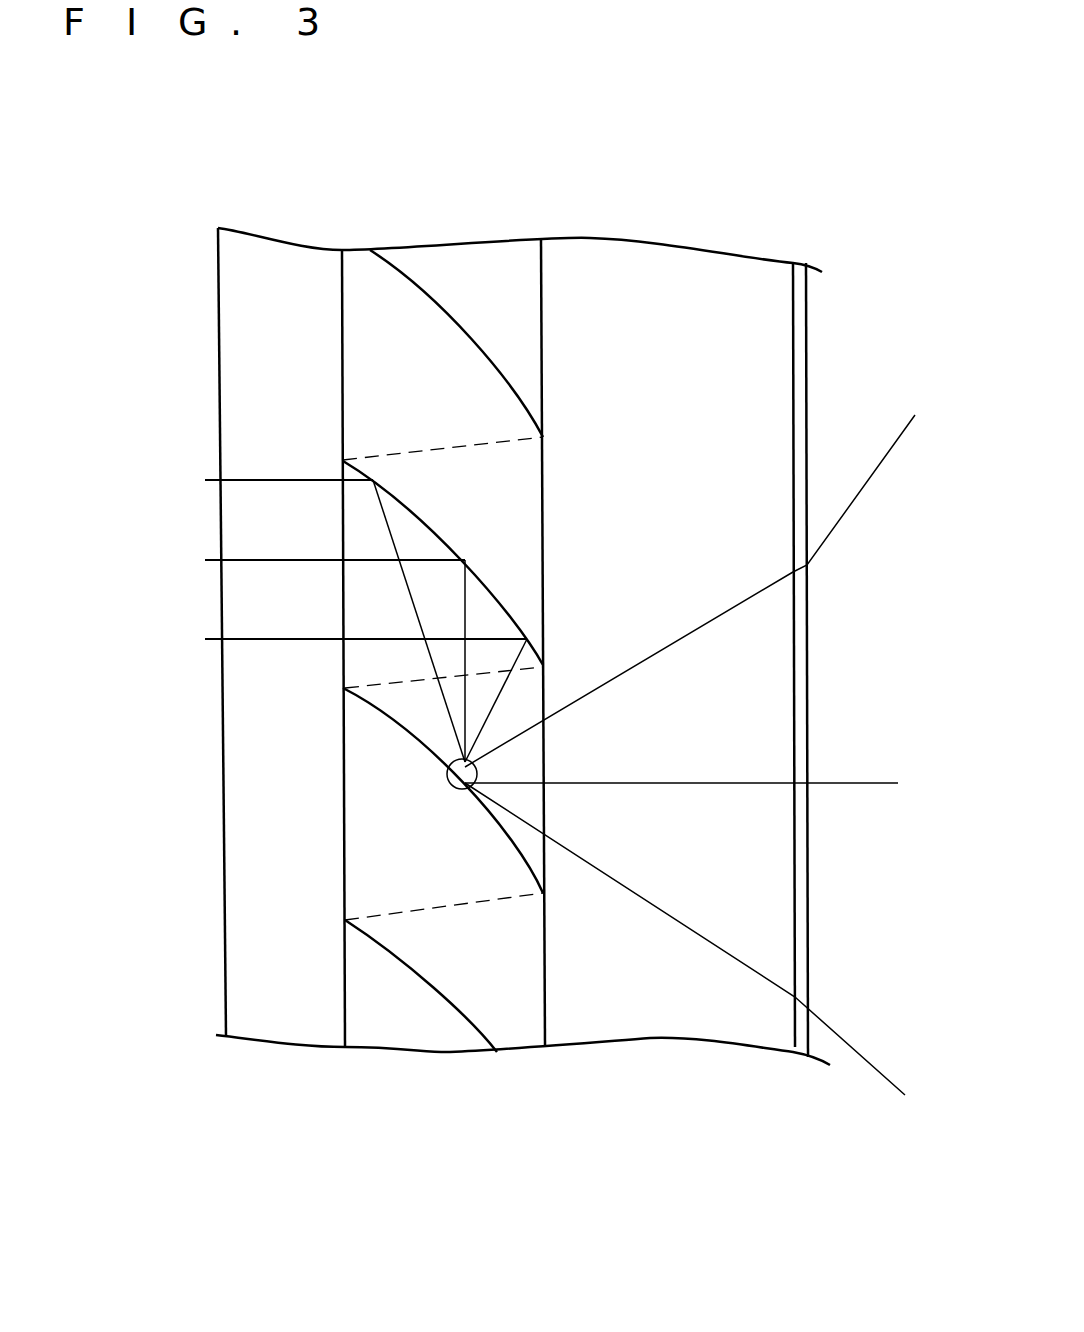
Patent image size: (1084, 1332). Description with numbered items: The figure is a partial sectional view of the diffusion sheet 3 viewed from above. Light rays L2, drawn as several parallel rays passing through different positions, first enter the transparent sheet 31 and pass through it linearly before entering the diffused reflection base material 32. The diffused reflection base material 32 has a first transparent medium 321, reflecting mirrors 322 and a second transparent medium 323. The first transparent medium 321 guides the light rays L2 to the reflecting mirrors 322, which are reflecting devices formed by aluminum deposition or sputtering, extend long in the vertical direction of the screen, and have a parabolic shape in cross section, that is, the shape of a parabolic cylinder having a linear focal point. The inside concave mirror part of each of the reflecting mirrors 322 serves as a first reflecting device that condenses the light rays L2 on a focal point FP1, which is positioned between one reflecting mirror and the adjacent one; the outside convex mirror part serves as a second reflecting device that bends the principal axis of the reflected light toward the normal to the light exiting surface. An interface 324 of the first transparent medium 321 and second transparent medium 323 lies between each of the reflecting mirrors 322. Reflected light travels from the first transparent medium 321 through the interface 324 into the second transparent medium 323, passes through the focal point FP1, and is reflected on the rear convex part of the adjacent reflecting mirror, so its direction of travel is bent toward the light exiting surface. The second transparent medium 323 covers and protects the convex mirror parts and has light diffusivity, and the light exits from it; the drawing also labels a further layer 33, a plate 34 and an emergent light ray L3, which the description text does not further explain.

The diffusion sheet 3 is at (212, 192).
The transparent sheet 31 is at (287, 1018).
The diffused reflection base material 32 is at (345, 1195).
The first transparent medium 321 is at (373, 1036).
The reflecting mirrors 322 is at (483, 1036).
The second transparent medium 323 is at (517, 1032).
The interface 324 is at (435, 905).
The second transparent layer 33 is at (688, 1010).
The plate 34 is at (803, 1052).
The light ray L2 is at (185, 642).
The emergent light L3 is at (922, 763).
The focal point FP1 is at (450, 761).